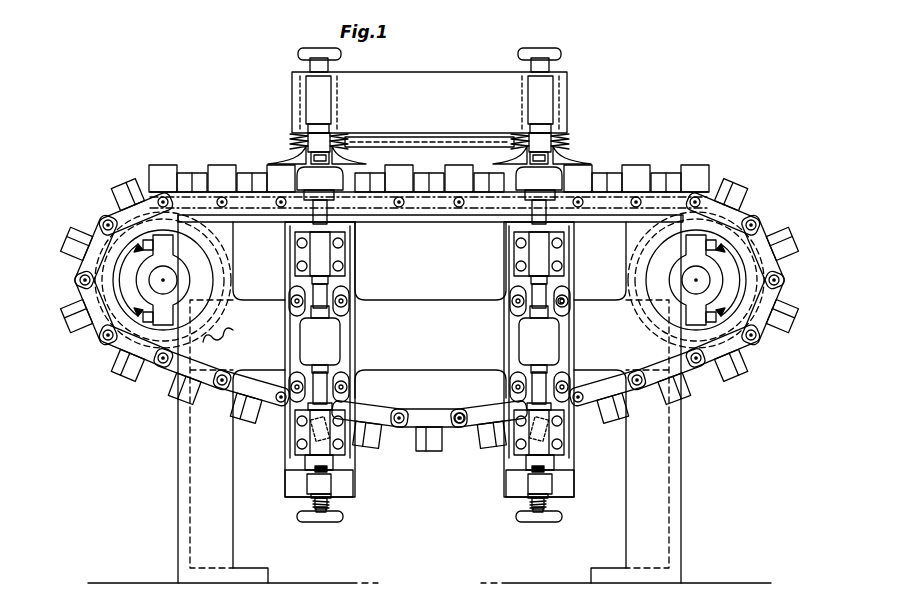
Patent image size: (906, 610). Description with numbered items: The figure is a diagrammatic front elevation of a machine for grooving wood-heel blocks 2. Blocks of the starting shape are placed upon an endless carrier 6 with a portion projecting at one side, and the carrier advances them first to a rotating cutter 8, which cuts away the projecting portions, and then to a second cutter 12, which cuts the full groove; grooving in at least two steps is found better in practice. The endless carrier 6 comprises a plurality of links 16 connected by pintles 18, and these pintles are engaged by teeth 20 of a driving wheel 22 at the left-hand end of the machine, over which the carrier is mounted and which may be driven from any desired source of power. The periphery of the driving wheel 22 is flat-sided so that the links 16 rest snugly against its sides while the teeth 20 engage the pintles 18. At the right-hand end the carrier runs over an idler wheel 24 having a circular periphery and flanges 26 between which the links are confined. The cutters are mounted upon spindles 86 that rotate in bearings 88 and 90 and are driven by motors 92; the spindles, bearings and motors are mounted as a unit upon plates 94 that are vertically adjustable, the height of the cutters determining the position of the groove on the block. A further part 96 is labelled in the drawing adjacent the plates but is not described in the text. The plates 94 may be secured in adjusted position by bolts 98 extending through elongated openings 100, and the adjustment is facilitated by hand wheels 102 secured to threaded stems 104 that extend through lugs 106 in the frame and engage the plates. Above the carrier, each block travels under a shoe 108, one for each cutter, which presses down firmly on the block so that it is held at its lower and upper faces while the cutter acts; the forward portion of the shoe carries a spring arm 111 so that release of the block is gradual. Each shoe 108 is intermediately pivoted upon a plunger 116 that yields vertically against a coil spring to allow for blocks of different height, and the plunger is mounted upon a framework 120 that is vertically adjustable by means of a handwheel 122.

The wood-heel block 2 is at (212, 165).
The endless carrier 6 is at (102, 205).
The rotating cutter 8 is at (522, 200).
The second cutter 12 is at (335, 185).
The links 16 is at (100, 345).
The pintles 18 is at (82, 280).
The teeth 20 is at (252, 316).
The driving wheel 22 is at (200, 262).
The idler wheel 24 is at (752, 283).
The flanges 26 is at (776, 300).
The spindles 86 is at (326, 310).
The bearings 88 is at (326, 254).
The bearings 90 is at (348, 455).
The motors 92 is at (336, 345).
The plates 94 is at (296, 340).
The roller pin 96 is at (578, 300).
The bolts 98 is at (352, 300).
The elongated openings 100 is at (290, 385).
The hand wheels 102 is at (318, 524).
The threaded stems 104 is at (330, 504).
The lugs 106 is at (300, 488).
The shoe 108 is at (357, 147).
The spring arm 111 is at (265, 172).
The plunger 116 is at (335, 128).
The framework 120 is at (295, 96).
The handwheel 122 is at (318, 50).